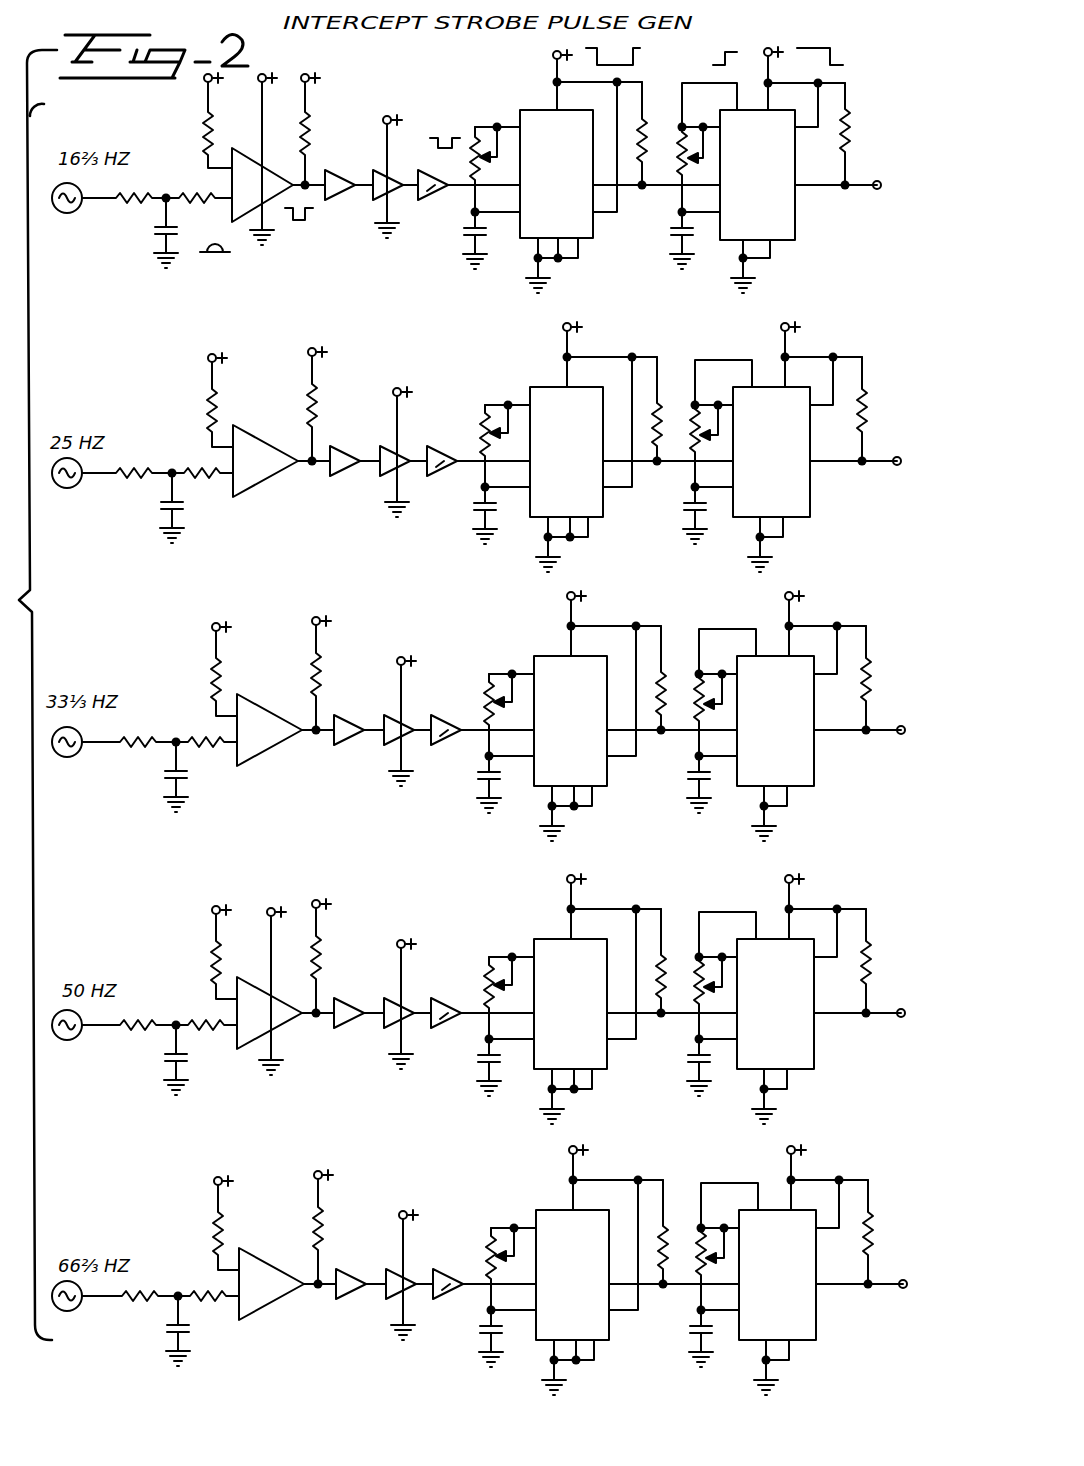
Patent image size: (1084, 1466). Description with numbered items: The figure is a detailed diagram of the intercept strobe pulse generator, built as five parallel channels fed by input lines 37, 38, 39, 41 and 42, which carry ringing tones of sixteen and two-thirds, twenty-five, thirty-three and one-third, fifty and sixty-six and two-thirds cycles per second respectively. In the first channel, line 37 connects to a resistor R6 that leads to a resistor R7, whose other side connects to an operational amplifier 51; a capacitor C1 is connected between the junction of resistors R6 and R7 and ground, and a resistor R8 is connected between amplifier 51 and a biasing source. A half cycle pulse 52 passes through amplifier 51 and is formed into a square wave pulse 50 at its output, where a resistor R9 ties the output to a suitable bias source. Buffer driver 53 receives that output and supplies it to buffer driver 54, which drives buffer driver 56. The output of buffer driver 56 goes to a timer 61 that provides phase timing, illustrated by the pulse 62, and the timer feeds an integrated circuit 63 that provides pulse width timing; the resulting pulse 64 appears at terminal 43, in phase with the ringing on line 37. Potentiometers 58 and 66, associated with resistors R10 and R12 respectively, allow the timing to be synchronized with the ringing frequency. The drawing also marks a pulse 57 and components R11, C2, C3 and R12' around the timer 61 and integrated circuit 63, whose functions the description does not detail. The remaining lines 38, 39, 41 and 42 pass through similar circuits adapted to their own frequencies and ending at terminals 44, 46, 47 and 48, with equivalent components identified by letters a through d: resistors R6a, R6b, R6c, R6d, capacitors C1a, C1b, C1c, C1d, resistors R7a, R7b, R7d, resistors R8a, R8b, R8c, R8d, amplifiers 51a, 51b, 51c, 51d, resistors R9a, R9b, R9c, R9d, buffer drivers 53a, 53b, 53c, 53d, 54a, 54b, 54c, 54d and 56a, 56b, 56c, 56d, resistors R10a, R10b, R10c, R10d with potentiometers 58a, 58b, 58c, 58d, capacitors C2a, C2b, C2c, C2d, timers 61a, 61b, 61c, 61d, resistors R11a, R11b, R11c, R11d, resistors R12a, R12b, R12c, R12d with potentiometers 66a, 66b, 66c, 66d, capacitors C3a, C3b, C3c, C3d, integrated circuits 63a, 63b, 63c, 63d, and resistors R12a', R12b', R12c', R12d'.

The input line 37 is at (62, 216).
The input line 38 is at (68, 495).
The input line 39 is at (71, 757).
The input line 41 is at (74, 1042).
The input line 42 is at (72, 1315).
The resistor R6 is at (130, 203).
The resistor R6a is at (137, 456).
The resistor R6b is at (147, 722).
The resistor R6c is at (154, 1007).
The resistor R6d is at (157, 1279).
The capacitor C1 is at (179, 233).
The capacitor C1a is at (144, 508).
The capacitor C1b is at (148, 777).
The capacitor C1c is at (149, 1060).
The capacitor C1d is at (150, 1331).
The resistor R7 is at (196, 183).
The resistor R7a is at (206, 503).
The resistor R7b is at (219, 769).
The resistor R7d is at (212, 1332).
The resistor R8 is at (204, 120).
The resistor R8a is at (235, 400).
The resistor R8b is at (242, 669).
The resistor R8c is at (249, 937).
The resistor R8d is at (242, 1223).
The operational amplifier 51 is at (248, 217).
The operational amplifier 51a is at (265, 473).
The operational amplifier 51b is at (269, 741).
The operational amplifier 51c is at (259, 1002).
The operational amplifier 51d is at (271, 1298).
The half cycle pulse 52 is at (211, 258).
The square wave pulse 50 is at (296, 221).
The pulse signal 57 is at (442, 136).
The pulse 62 is at (640, 52).
The pulse 64 is at (823, 48).
The resistor R9 is at (322, 129).
The resistor R9a is at (335, 404).
The resistor R9b is at (341, 673).
The resistor R9c is at (342, 956).
The resistor R9d is at (341, 1227).
The buffer driver 53 is at (340, 175).
The buffer driver 53a is at (342, 447).
The buffer driver 53b is at (346, 715).
The buffer driver 53c is at (353, 999).
The buffer driver 53d is at (341, 1301).
The buffer driver 54 is at (376, 197).
The buffer driver 54a is at (372, 454).
The buffer driver 54b is at (381, 721).
The buffer driver 54c is at (412, 1004).
The buffer driver 54d is at (415, 1275).
The buffer driver 56 is at (435, 201).
The buffer driver 56a is at (434, 481).
The buffer driver 56b is at (437, 712).
The buffer driver 56c is at (439, 1033).
The buffer driver 56d is at (445, 1306).
The resistor R10 is at (458, 156).
The resistor R10a is at (455, 424).
The resistor R10b is at (458, 686).
The resistor R10c is at (458, 969).
The resistor R10d is at (459, 1222).
The potentiometer 58 is at (500, 154).
The potentiometer 58a is at (484, 399).
The potentiometer 58b is at (492, 667).
The potentiometer 58c is at (493, 947).
The potentiometer 58d is at (493, 1222).
The timing capacitor C2 is at (489, 240).
The timing capacitor C2a is at (456, 515).
The timing capacitor C2b is at (461, 784).
The timing capacitor C2c is at (501, 1070).
The timing capacitor C2d is at (461, 1347).
The timer 61 is at (590, 236).
The timer 61a is at (561, 447).
The timer 61b is at (565, 716).
The timer 61c is at (573, 999).
The timer 61d is at (569, 1270).
The resistor R11 is at (660, 133).
The resistor R11a is at (651, 395).
The resistor R11b is at (685, 664).
The resistor R11c is at (644, 945).
The resistor R11d is at (675, 1218).
The resistor R12 is at (666, 170).
The resistor R12a is at (706, 410).
The resistor R12b is at (666, 729).
The resistor R12c is at (696, 959).
The resistor R12d is at (679, 1276).
The potentiometer 66 is at (714, 158).
The potentiometer 66a is at (741, 422).
The potentiometer 66b is at (724, 672).
The potentiometer 66c is at (721, 953).
The potentiometer 66d is at (727, 1224).
The timing capacitor C3 is at (694, 240).
The timing capacitor C3a is at (671, 515).
The timing capacitor C3b is at (670, 785).
The timing capacitor C3c is at (684, 1075).
The timing capacitor C3d is at (711, 1352).
The integrated circuit 63 is at (798, 214).
The integrated circuit 63a is at (800, 447).
The integrated circuit 63b is at (804, 716).
The integrated circuit 63c is at (775, 995).
The integrated circuit 63d is at (776, 1270).
The output resistor R12' is at (868, 134).
The output resistor R12a' is at (888, 409).
The output resistor R12b' is at (893, 678).
The output resistor R12c' is at (892, 961).
The output resistor R12d' is at (895, 1232).
The terminal 43 is at (868, 182).
The terminal 44 is at (895, 444).
The terminal 46 is at (900, 713).
The terminal 47 is at (900, 995).
The terminal 48 is at (905, 1267).